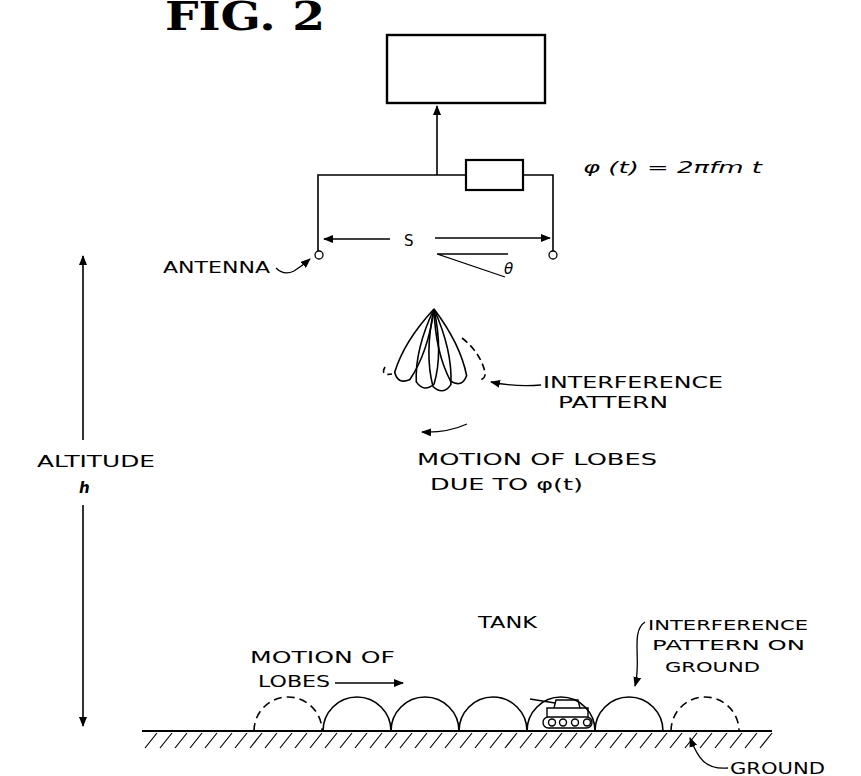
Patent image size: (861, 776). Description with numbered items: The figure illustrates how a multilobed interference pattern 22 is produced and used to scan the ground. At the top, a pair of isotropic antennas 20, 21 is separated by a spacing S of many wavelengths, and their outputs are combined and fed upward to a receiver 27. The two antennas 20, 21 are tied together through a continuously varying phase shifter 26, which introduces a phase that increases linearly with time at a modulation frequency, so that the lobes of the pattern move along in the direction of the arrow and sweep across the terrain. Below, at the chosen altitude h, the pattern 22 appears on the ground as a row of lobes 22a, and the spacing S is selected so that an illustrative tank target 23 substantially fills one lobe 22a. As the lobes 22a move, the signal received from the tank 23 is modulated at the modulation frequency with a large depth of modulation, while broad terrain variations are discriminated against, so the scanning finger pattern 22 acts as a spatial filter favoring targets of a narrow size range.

The isotropic antenna 20 is at (322, 259).
The isotropic antenna 21 is at (558, 256).
The multilobed interference pattern 22 is at (484, 360).
The lobe 22a is at (486, 698).
The tank target 23 is at (563, 699).
The continuously varying phase shifter 26 is at (513, 160).
The receiver 27 is at (545, 45).